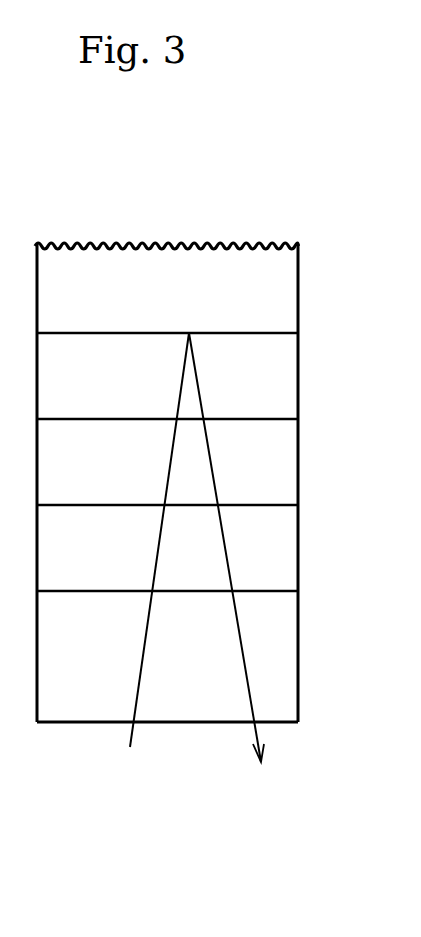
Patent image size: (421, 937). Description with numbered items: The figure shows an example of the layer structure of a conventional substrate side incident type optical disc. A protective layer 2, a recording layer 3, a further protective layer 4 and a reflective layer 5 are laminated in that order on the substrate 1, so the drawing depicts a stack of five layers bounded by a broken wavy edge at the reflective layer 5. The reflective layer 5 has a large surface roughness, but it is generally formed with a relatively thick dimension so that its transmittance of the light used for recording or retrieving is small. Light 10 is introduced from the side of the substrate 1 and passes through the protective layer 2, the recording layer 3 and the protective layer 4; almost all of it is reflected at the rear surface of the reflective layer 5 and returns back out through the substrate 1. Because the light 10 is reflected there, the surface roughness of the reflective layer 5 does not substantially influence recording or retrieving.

The substrate 1 is at (283, 643).
The protective layer 2 is at (293, 551).
The recording layer 3 is at (293, 458).
The protective layer 4 is at (293, 379).
The reflective layer 5 is at (292, 294).
The light 10 is at (132, 732).